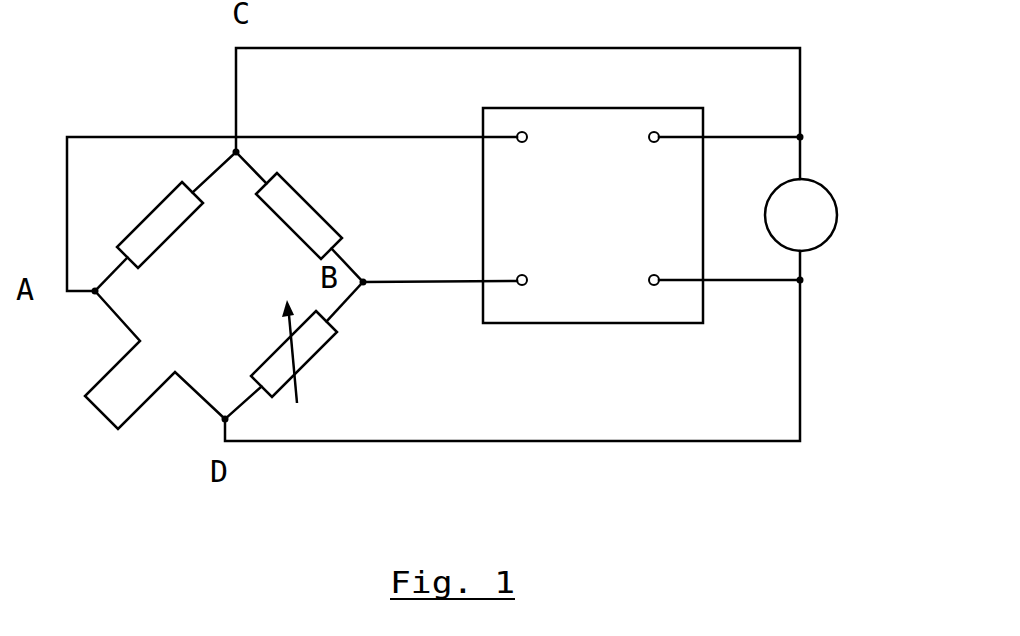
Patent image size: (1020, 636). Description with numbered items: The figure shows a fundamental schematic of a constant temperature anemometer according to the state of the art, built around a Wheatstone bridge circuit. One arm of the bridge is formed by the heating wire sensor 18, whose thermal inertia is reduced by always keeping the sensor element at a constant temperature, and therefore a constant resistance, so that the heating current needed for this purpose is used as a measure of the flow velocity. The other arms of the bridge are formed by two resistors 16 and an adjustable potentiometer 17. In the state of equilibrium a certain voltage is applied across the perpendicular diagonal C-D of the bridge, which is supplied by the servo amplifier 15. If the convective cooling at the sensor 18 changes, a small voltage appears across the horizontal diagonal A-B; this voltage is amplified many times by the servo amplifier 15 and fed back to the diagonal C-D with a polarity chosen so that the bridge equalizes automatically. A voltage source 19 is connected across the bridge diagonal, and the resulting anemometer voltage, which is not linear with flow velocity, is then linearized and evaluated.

The servo amplifier 15 is at (593, 259).
The resistor 16 is at (238, 216).
The potentiometer 17 is at (327, 351).
The heating wire sensor 18 is at (141, 409).
The voltage source 19 is at (841, 196).